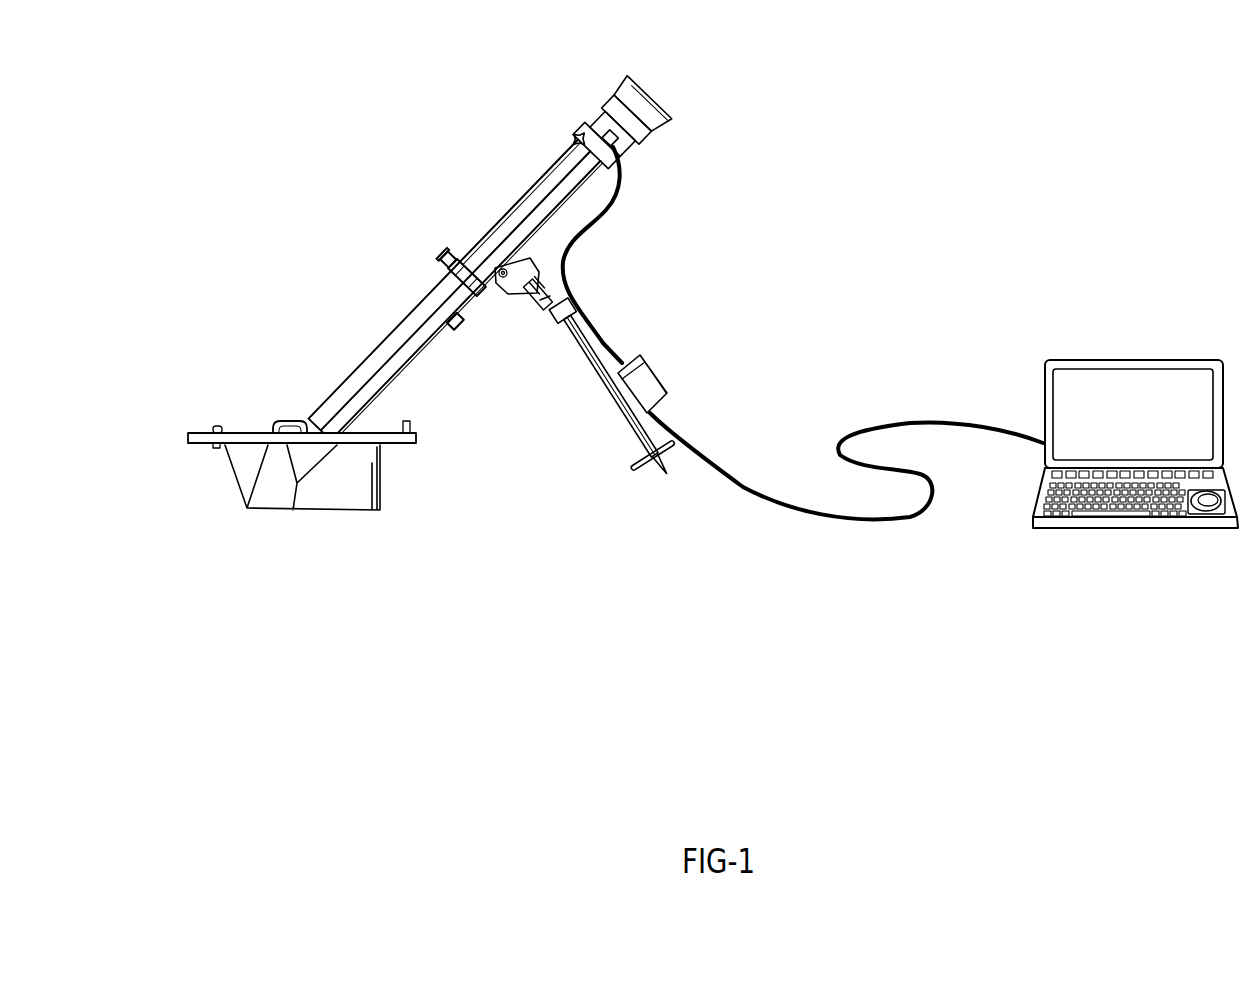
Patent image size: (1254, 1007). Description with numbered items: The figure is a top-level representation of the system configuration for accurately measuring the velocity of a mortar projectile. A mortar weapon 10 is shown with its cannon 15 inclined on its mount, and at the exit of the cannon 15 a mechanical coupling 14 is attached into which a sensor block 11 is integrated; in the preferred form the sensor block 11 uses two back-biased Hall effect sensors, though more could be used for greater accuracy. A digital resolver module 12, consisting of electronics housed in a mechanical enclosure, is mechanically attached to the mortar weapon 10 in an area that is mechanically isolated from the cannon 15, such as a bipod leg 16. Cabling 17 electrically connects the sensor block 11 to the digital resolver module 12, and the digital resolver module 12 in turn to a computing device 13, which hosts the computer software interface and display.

The mortar weapon 10 is at (303, 302).
The sensor block 11 is at (613, 143).
The digital resolver module 12 is at (660, 378).
The computing device 13 is at (1152, 360).
The mechanical coupling 14 is at (660, 97).
The cannon 15 is at (517, 202).
The bipod leg 16 is at (587, 367).
The cabling 17 is at (893, 423).